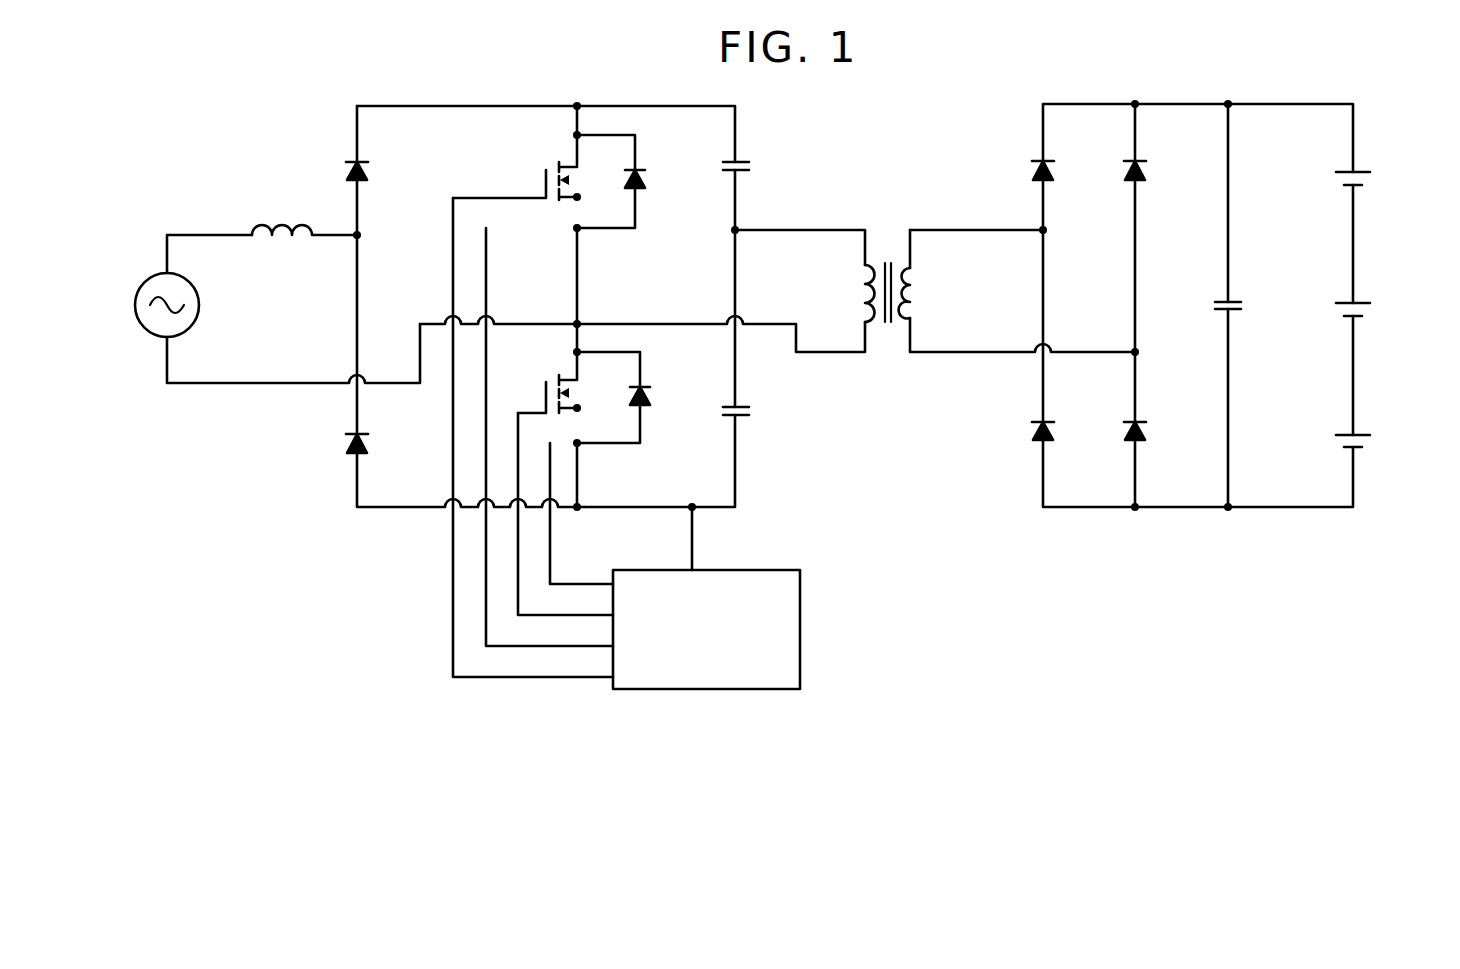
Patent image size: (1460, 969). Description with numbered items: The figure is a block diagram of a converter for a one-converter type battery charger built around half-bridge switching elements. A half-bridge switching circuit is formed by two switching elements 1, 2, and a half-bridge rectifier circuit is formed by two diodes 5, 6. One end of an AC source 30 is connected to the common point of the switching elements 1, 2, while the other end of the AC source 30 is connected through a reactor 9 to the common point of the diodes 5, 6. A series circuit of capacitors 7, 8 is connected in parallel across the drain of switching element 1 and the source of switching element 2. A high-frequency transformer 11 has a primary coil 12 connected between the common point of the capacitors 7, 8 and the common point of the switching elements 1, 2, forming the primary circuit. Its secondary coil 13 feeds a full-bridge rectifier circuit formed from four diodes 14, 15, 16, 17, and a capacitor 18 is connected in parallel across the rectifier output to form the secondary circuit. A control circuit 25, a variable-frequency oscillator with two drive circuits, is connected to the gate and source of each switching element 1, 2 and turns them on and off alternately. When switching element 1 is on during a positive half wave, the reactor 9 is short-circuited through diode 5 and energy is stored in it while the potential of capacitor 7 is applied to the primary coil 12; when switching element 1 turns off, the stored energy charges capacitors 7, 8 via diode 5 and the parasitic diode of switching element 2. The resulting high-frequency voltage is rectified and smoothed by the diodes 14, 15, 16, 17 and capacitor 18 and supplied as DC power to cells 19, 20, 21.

The switching element 1 is at (538, 176).
The switching element 2 is at (540, 394).
The diode 5 is at (370, 188).
The diode 6 is at (400, 452).
The capacitor 7 is at (777, 160).
The capacitor 8 is at (781, 440).
The reactor 9 is at (284, 253).
The high-frequency transformer 11 is at (885, 340).
The primary coil 12 is at (854, 288).
The secondary coil 13 is at (924, 292).
The diode 14 is at (1008, 176).
The diode 15 is at (1025, 443).
The diode 16 is at (1103, 172).
The diode 17 is at (1117, 440).
The capacitor 18 is at (1237, 320).
The cell 19 is at (1393, 203).
The cell 20 is at (1396, 325).
The cell 21 is at (1400, 449).
The control circuit 25 is at (804, 645).
The AC source 30 is at (155, 350).